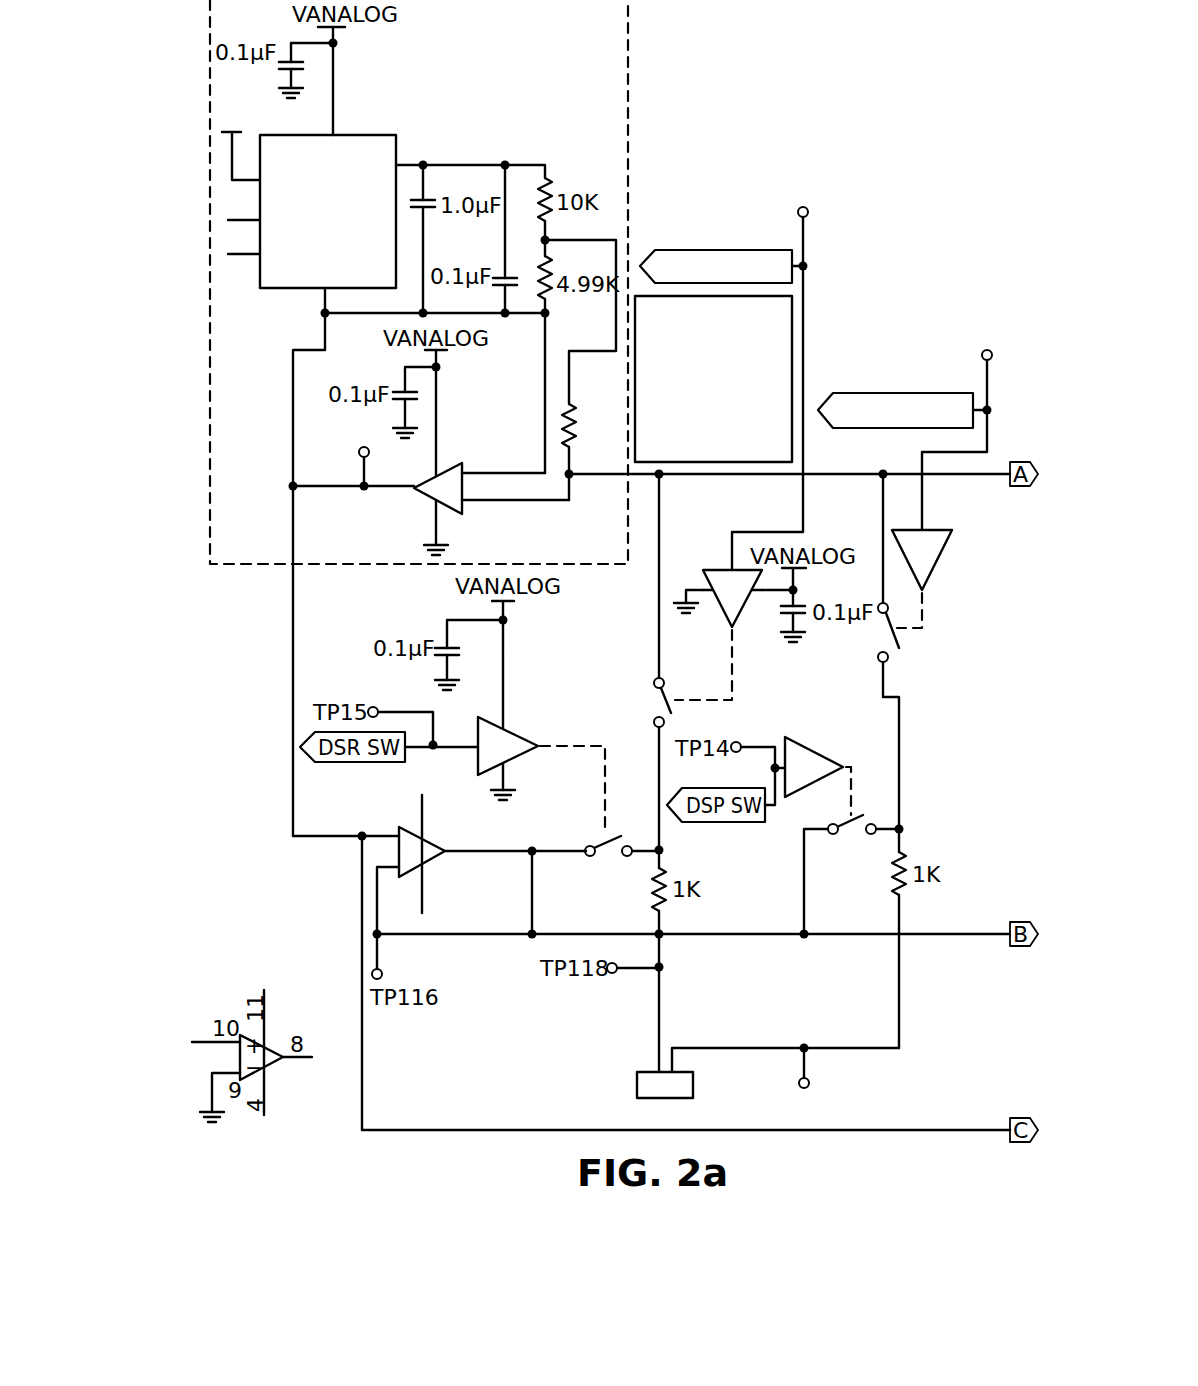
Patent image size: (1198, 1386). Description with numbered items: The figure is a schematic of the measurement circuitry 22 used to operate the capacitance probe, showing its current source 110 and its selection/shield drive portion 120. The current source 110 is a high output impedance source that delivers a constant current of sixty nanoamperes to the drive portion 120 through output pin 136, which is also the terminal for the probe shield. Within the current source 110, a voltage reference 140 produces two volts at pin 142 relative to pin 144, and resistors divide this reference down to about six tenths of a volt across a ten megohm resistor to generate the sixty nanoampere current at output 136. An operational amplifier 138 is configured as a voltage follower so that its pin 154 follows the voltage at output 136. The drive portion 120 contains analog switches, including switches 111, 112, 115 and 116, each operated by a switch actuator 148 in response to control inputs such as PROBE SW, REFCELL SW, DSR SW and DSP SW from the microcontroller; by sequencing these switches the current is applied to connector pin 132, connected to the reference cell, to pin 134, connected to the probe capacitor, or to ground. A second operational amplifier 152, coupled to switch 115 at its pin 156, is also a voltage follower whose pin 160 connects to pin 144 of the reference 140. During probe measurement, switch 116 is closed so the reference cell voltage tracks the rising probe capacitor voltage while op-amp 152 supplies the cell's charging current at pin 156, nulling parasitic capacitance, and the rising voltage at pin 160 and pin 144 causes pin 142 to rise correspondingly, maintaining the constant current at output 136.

The circuitry 22 is at (893, 172).
The current source 110 is at (627, 186).
The selection/shield drive portion 120 is at (898, 298).
The terminal 132 is at (673, 1068).
The terminal 134 is at (659, 1070).
The output pin 136 is at (568, 472).
The operational amplifier 138 is at (440, 492).
The voltage reference 140 is at (277, 273).
The pin 142 is at (398, 163).
The pin 144 is at (323, 291).
The switch actuator 148 is at (731, 569).
The operational amplifier 152 is at (427, 867).
The pin 154 is at (413, 489).
The pin 156 is at (530, 853).
The pin 160 is at (362, 836).
The analog switch 111 is at (687, 671).
The analog switch 112 is at (923, 663).
The analog switch 115 is at (615, 879).
The analog switch 116 is at (851, 874).